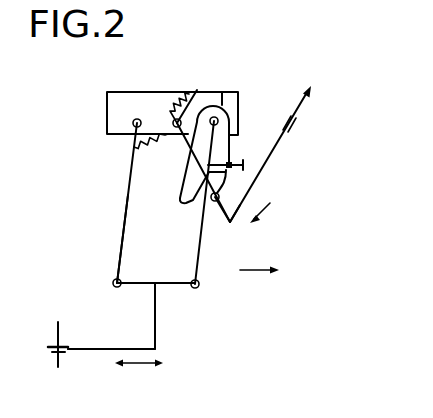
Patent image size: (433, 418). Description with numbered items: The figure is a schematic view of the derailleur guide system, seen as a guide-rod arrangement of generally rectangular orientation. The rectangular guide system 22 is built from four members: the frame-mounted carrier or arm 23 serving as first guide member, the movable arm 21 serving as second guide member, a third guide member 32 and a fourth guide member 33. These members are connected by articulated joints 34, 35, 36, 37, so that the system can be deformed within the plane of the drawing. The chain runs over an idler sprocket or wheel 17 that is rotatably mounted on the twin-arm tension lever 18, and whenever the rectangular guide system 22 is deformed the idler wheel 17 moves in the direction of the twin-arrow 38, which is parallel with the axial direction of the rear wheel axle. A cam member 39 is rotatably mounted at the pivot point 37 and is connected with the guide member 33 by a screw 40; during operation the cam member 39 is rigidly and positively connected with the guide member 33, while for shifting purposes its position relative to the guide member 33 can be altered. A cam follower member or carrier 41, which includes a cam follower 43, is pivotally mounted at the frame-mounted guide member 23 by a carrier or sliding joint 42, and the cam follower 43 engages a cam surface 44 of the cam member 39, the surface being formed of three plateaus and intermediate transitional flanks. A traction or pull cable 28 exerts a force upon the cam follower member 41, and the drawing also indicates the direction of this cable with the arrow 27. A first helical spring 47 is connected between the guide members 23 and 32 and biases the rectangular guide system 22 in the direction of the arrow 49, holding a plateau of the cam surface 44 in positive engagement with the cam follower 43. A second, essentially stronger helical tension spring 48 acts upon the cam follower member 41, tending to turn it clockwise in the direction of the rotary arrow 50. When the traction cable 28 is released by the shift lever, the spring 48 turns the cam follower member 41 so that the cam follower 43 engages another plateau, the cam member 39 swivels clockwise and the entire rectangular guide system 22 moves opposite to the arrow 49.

The idler sprocket 17 is at (58, 333).
The tension lever 18 is at (97, 351).
The movable arm 21 is at (173, 287).
The rectangular guide system 22 is at (121, 205).
The frame-mounted carrier 23 is at (123, 97).
The direction of movement arrow 27 is at (296, 127).
The traction cable 28 is at (275, 150).
The third guide member 32 is at (118, 246).
The fourth guide member 33 is at (199, 263).
The articulated joint 34 is at (117, 288).
The articulated joint 35 is at (200, 289).
The articulated joint 36 is at (133, 123).
The pivot point 37 is at (222, 92).
The twin-arrow 38 is at (143, 364).
The cam member 39 is at (223, 148).
The screw 40 is at (240, 164).
The cam follower member 41 is at (186, 140).
The sliding joint 42 is at (193, 97).
The cam follower 43 is at (213, 204).
The cam surface 44 is at (192, 204).
The first helical spring 47 is at (134, 145).
The second helical tension spring 48 is at (175, 92).
The arrow 49 is at (257, 275).
The rotary arrow 50 is at (272, 208).